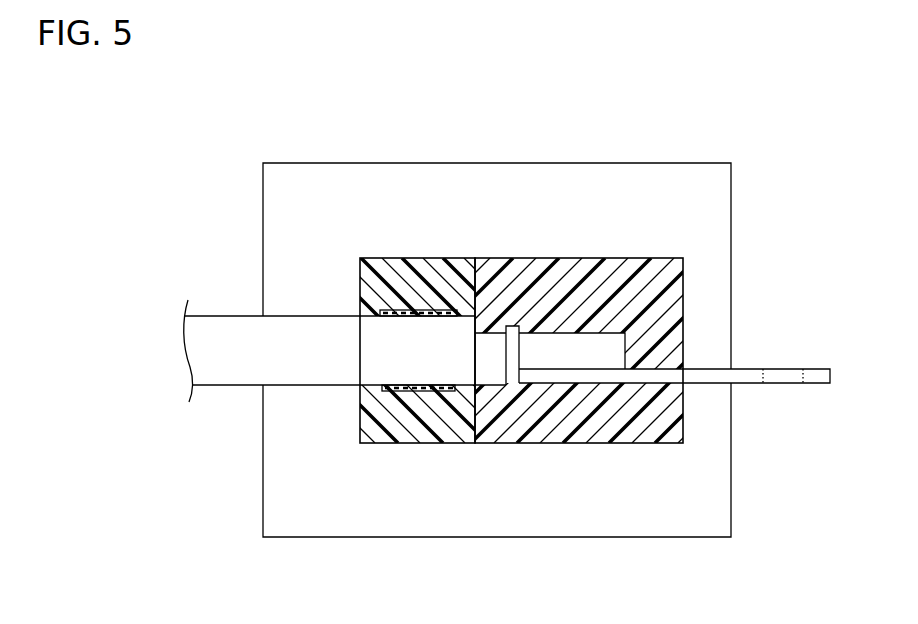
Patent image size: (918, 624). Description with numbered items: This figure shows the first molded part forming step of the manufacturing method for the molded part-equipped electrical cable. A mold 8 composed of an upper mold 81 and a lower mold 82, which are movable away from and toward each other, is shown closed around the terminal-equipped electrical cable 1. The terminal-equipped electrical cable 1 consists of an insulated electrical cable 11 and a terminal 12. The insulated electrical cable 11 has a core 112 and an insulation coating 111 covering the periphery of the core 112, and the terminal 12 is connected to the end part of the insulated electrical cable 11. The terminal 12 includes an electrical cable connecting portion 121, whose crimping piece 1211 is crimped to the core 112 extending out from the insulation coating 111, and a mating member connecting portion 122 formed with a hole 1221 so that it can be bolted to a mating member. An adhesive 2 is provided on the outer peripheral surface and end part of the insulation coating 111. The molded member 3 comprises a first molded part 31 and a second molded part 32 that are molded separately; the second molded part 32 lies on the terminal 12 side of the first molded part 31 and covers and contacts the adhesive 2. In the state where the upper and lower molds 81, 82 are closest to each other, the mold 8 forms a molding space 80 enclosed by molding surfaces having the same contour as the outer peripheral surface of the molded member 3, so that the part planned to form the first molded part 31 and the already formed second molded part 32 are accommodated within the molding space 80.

The terminal-equipped electrical cable 1 is at (321, 420).
The insulated electrical cable 11 is at (345, 363).
The insulation coating 111 is at (237, 316).
The adhesive 2 is at (403, 391).
The molded member 3 is at (526, 267).
The first molded part 31 is at (437, 258).
The second molded part 32 is at (510, 258).
The core 112 is at (567, 342).
The terminal 12 is at (686, 453).
The electrical cable connecting portion 121 is at (582, 383).
The crimping piece 1211 is at (513, 355).
The mating member connecting portion 122 is at (768, 352).
The hole 1221 is at (796, 365).
The mold 8 is at (501, 316).
The molding space 80 is at (682, 408).
The upper mold 81 is at (731, 222).
The lower mold 82 is at (731, 503).